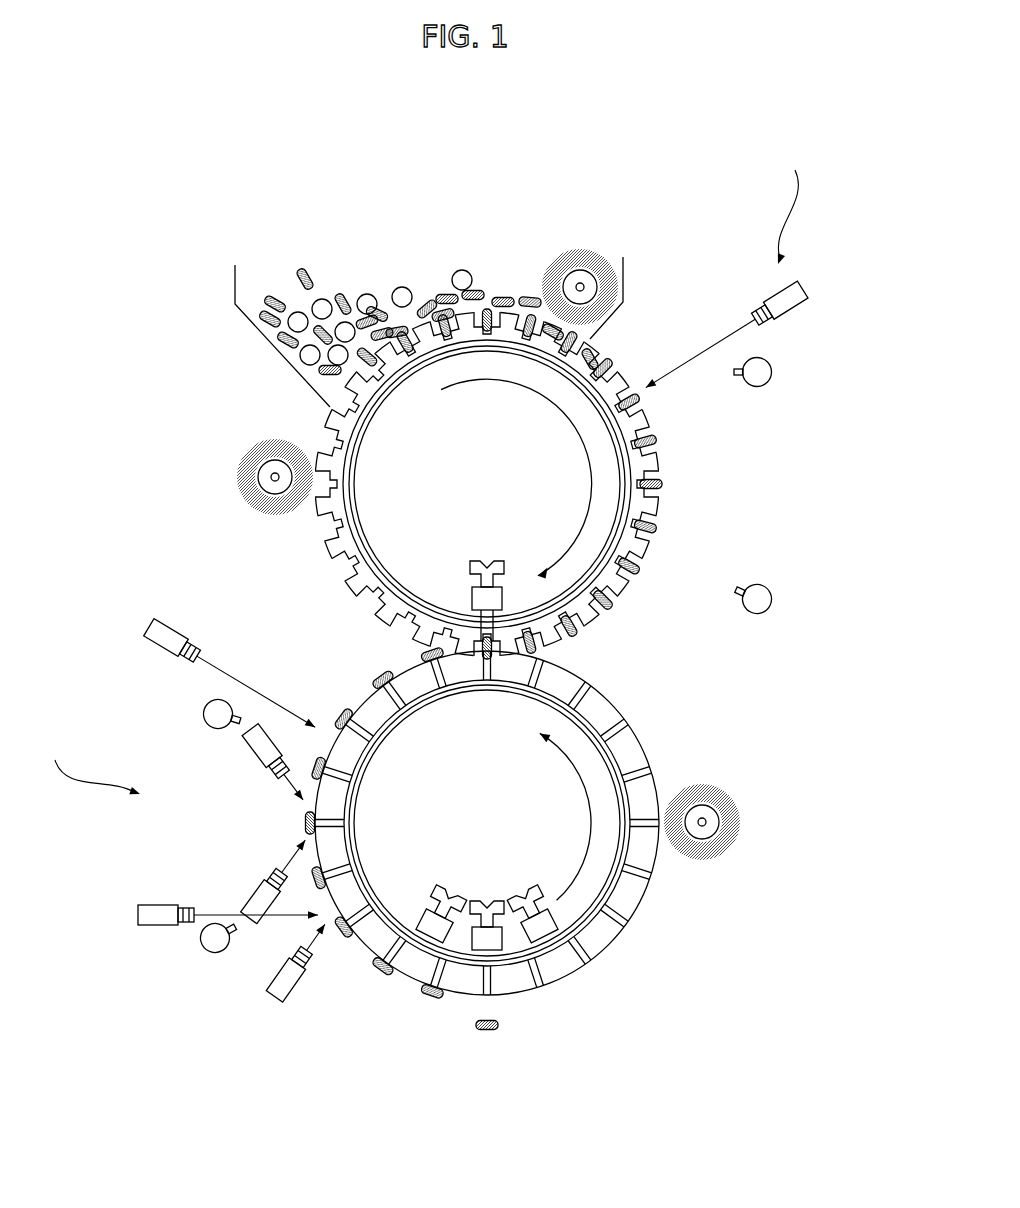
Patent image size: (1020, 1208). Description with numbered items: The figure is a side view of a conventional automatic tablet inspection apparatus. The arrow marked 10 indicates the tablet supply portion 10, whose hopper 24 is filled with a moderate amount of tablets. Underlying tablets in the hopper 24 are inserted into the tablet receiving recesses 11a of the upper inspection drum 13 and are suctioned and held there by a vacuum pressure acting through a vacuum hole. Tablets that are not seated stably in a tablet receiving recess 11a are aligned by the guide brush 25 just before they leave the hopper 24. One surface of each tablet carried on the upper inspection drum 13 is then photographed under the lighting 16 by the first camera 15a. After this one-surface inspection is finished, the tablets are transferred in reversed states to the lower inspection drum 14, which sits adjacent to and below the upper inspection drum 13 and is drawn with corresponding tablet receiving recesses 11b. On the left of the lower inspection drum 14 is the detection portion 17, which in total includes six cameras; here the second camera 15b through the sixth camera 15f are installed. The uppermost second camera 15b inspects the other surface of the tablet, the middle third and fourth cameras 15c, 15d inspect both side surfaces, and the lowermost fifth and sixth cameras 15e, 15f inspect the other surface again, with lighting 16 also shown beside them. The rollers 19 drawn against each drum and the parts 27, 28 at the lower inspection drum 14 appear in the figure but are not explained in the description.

The tablet supply portion 10 is at (412, 246).
The tablet receiving recesses 11a is at (622, 356).
The second rotating drum 11b is at (624, 697).
The upper inspection drum 13 is at (655, 500).
The lower inspection drum 14 is at (650, 882).
The first camera 15a is at (805, 295).
The second camera 15b is at (165, 625).
The third camera 15c is at (256, 738).
The fourth camera 15d is at (262, 882).
The fifth camera 15e is at (148, 923).
The sixth camera 15f is at (292, 990).
The lighting 16 is at (771, 368).
The detection portion 17 is at (415, 468).
The brush roller 19 is at (255, 455).
The hopper 24 is at (235, 275).
The guide brush 25 is at (585, 250).
The discharge gate 27 is at (410, 892).
The discharge slot 28 is at (318, 816).